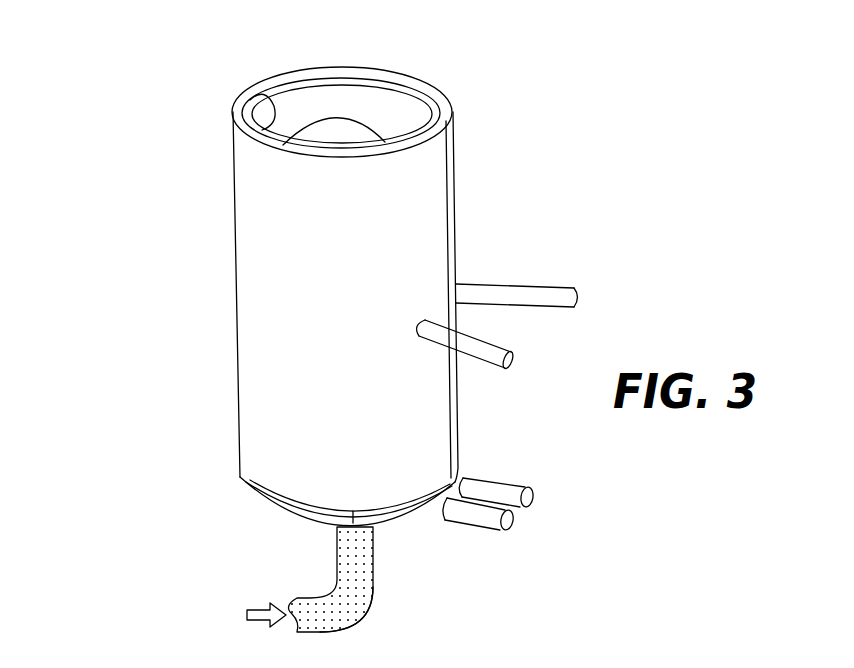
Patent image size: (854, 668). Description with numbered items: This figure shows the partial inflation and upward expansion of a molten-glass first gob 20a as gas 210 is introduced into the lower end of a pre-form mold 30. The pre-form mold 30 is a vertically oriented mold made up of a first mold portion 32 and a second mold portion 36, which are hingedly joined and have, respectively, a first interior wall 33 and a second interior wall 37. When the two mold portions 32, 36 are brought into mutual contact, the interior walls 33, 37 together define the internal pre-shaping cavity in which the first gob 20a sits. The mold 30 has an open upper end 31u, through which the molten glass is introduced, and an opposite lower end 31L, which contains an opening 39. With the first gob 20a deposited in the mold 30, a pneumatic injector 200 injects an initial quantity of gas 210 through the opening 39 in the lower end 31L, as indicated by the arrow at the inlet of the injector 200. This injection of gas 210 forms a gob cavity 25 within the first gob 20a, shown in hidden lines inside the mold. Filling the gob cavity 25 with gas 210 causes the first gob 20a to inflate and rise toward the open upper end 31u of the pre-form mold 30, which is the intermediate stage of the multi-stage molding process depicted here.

The pre-form mold 30 is at (457, 200).
The open upper end 31u is at (397, 97).
The lower end 31L is at (257, 472).
The first mold portion 32 is at (268, 282).
The first interior wall 33 is at (258, 120).
The gob cavity 25 is at (322, 128).
The first gob 20a is at (353, 133).
The second mold portion 36 is at (455, 147).
The second interior wall 37 is at (418, 113).
The opening 39 is at (368, 540).
The pneumatic injector 200 is at (372, 586).
The gas 210 is at (330, 140).